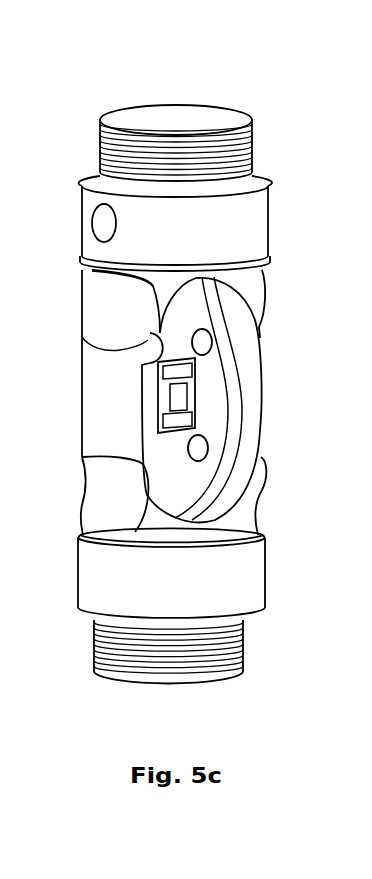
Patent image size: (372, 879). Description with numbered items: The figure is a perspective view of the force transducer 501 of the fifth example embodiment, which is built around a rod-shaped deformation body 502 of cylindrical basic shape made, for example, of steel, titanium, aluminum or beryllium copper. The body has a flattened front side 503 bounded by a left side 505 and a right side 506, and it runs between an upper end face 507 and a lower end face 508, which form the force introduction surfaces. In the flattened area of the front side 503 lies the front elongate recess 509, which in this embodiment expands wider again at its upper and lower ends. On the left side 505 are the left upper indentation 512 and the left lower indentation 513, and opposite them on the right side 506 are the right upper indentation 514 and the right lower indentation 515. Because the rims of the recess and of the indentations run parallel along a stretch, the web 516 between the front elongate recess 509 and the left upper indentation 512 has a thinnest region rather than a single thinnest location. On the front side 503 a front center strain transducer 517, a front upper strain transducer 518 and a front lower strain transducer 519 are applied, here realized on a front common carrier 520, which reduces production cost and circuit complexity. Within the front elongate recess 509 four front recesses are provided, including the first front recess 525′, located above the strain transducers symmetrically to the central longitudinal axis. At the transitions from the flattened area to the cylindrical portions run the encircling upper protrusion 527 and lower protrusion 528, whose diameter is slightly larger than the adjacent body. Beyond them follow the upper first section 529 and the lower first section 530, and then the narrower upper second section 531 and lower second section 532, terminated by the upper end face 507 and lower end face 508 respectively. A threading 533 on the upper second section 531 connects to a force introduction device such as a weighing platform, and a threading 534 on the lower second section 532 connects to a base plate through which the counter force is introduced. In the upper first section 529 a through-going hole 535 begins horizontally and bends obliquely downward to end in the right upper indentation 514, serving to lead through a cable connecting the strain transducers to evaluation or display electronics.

The force transducer 501 is at (299, 99).
The deformation body 502 is at (230, 517).
The front side 503 is at (223, 563).
The left side 505 is at (105, 423).
The right side 506 is at (204, 449).
The upper end face 507 is at (155, 117).
The lower end face 508 is at (128, 685).
The front elongate recess 509 is at (209, 427).
The left upper indentation 512 is at (112, 318).
The left lower indentation 513 is at (107, 508).
The right upper indentation 514 is at (262, 294).
The right lower indentation 515 is at (254, 474).
The web 516 is at (155, 330).
The front center strain transducer 517 is at (182, 398).
The front upper strain transducer 518 is at (188, 370).
The front lower strain transducer 519 is at (182, 422).
The front common carrier 520 is at (158, 397).
The first front recess 525′ is at (155, 350).
The upper protrusion 527 is at (268, 261).
The lower protrusion 528 is at (267, 537).
The upper first section 529 is at (253, 235).
The lower first section 530 is at (247, 600).
The upper second section 531 is at (236, 181).
The lower second section 532 is at (227, 627).
The threading 533 is at (252, 152).
The threading 534 is at (108, 653).
The through-going hole 535 is at (105, 223).